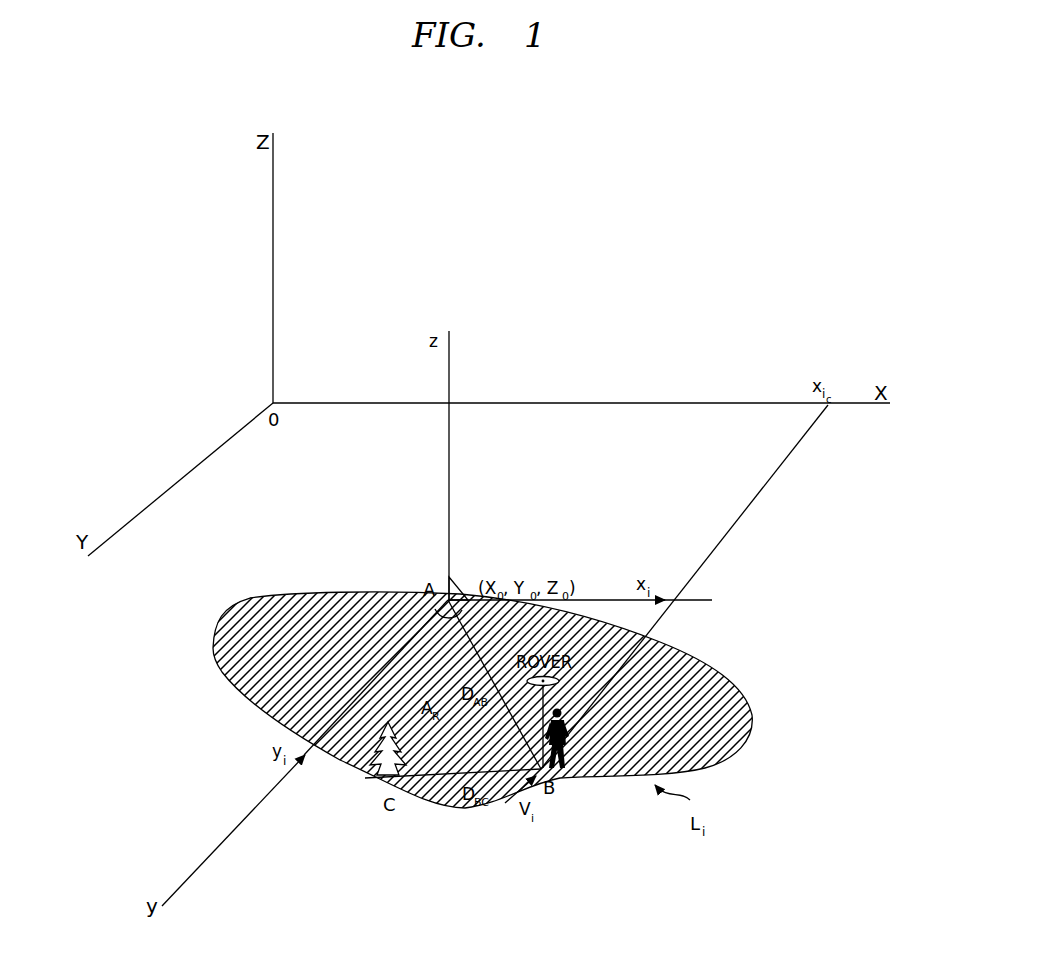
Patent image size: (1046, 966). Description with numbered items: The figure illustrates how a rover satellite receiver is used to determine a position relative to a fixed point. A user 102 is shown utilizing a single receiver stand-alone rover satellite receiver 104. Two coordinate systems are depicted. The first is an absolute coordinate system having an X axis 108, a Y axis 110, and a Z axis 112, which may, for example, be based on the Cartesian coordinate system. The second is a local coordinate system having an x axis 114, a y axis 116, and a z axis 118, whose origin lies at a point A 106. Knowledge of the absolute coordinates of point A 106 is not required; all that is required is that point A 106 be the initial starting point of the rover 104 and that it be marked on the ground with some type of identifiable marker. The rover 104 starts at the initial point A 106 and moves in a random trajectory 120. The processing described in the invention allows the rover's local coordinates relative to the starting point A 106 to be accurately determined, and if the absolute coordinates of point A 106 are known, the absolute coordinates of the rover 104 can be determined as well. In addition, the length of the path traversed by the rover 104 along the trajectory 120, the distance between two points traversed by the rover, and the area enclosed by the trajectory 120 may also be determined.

The user 102 is at (567, 738).
The rover satellite receiver 104 is at (557, 708).
The point A 106 is at (447, 594).
The X axis 108 is at (622, 402).
The Y axis 110 is at (188, 470).
The Z axis 112 is at (274, 270).
The x axis 114 is at (624, 599).
The y axis 116 is at (229, 837).
The z axis 118 is at (450, 452).
The random trajectory 120 is at (745, 681).